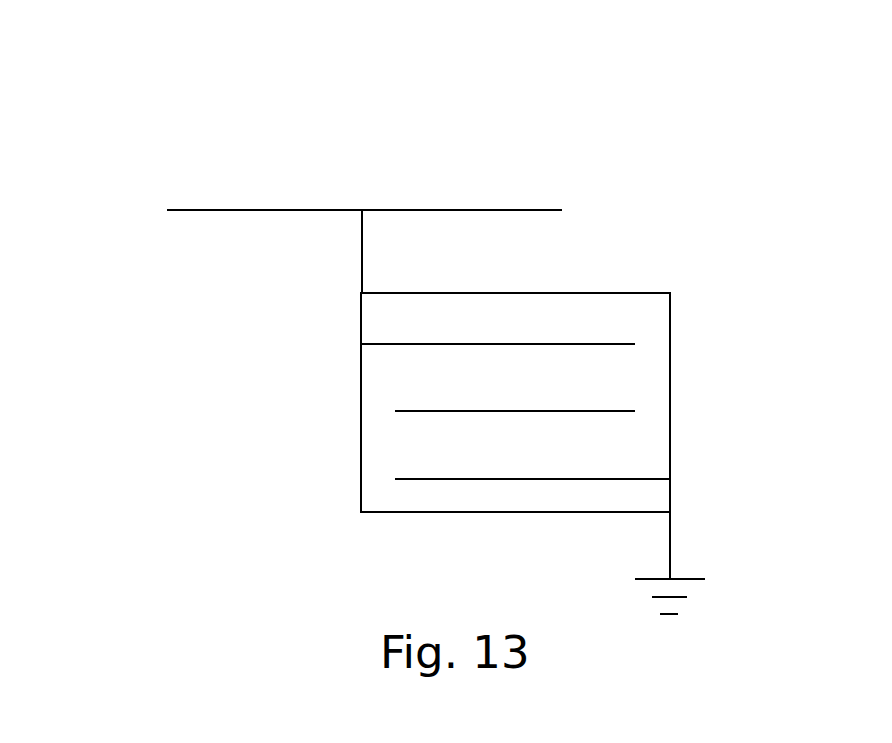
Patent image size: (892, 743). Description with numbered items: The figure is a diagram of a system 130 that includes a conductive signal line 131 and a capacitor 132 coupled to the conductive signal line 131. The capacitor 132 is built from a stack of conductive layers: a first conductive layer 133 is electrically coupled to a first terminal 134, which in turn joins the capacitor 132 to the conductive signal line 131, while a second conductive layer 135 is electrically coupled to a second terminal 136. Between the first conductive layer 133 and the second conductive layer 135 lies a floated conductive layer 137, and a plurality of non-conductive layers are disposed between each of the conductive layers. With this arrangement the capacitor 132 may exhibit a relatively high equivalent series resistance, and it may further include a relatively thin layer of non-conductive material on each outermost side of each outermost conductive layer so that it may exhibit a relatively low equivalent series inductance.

The system 130 is at (202, 160).
The conductive signal line 131 is at (303, 209).
The capacitor 132 is at (477, 293).
The first conductive layer 133 is at (567, 344).
The first terminal 134 is at (361, 275).
The second conductive layer 135 is at (567, 479).
The second terminal 136 is at (670, 538).
The floated conductive layer 137 is at (567, 411).